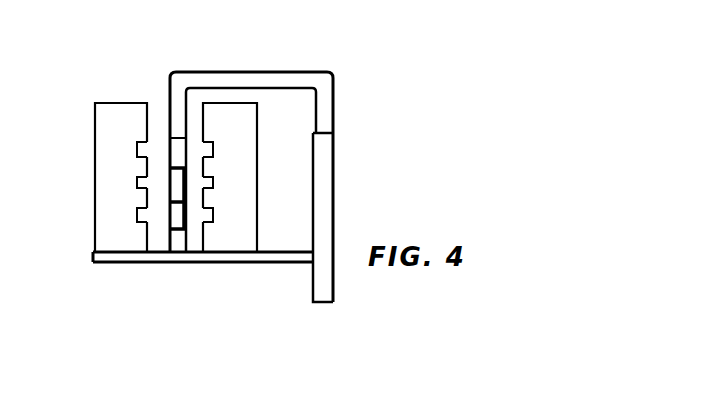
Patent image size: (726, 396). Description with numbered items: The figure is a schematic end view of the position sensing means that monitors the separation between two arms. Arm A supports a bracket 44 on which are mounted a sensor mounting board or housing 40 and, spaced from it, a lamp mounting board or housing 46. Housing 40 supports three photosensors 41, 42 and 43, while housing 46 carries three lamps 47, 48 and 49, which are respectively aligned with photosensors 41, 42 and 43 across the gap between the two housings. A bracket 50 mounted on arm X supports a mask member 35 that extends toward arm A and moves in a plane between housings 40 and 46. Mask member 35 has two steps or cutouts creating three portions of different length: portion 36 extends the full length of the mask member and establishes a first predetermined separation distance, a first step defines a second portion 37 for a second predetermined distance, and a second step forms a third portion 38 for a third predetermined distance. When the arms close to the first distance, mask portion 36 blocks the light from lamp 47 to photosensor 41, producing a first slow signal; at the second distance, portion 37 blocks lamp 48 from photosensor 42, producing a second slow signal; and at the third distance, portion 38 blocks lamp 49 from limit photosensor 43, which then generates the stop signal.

The mask member 35 is at (168, 216).
The first mask portion 36 is at (173, 148).
The second mask portion 37 is at (182, 190).
The third mask portion 38 is at (175, 220).
The sensor mounting board or housing 40 is at (97, 113).
The photosensor 41 is at (137, 148).
The photosensor 42 is at (137, 182).
The limit photosensor 43 is at (137, 215).
The bracket 44 is at (203, 275).
The lamp mounting board or housing 46 is at (258, 219).
The lamp 47 is at (212, 148).
The lamp 48 is at (213, 183).
The lamp 49 is at (213, 216).
The bracket 50 is at (328, 90).
The arm A is at (327, 192).
The arm X is at (333, 155).